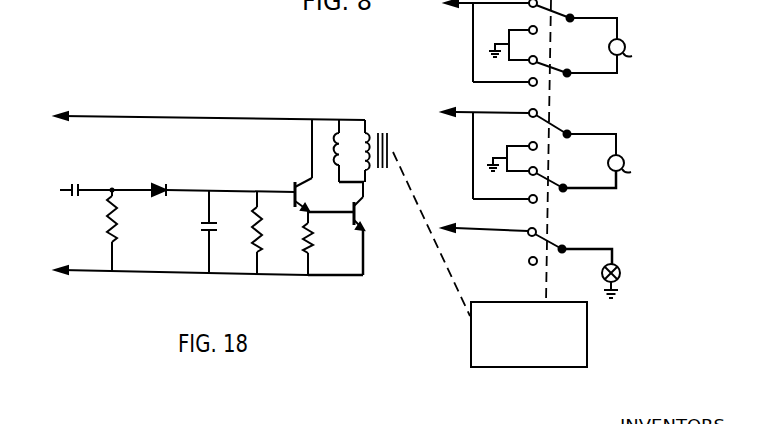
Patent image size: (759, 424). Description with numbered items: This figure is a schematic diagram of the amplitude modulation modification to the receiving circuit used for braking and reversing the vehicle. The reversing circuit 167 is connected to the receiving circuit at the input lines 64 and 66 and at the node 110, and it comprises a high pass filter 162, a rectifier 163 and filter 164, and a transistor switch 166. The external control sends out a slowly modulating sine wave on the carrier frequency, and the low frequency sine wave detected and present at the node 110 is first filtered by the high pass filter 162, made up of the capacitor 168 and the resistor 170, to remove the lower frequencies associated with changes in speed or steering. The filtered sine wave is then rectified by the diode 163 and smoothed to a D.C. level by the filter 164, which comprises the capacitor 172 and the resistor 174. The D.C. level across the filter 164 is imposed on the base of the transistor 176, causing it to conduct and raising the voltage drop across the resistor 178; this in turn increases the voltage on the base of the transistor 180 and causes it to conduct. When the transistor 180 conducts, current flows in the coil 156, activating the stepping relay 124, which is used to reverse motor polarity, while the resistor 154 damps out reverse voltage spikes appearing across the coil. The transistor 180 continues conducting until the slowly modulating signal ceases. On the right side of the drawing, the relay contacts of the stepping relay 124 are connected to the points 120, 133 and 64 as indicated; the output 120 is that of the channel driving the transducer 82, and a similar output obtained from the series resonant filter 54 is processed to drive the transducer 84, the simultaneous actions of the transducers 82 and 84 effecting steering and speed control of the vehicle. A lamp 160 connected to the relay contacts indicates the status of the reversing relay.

The series resonant filter 54 is at (257, 0).
The input line 64 is at (60, 112).
The input line 66 is at (60, 274).
The transducer 82 is at (629, 41).
The transducer 84 is at (624, 154).
The node 110 is at (61, 183).
The output 120 is at (450, 6).
The stepping relay 124 is at (512, 380).
The connection point 133 is at (447, 110).
The resistor 154 is at (344, 133).
The coil 156 is at (371, 135).
The lamp 160 is at (619, 263).
The high pass filter 162 is at (98, 202).
The rectifier 163 is at (158, 188).
The filter 164 is at (236, 184).
The transistor switch 166 is at (372, 231).
The reversing circuit 167 is at (320, 288).
The capacitor 168 is at (82, 187).
The resistor 170 is at (115, 212).
The capacitor 172 is at (207, 232).
The resistor 174 is at (259, 226).
The transistor 176 is at (298, 189).
The resistor 178 is at (311, 226).
The transistor 180 is at (366, 212).